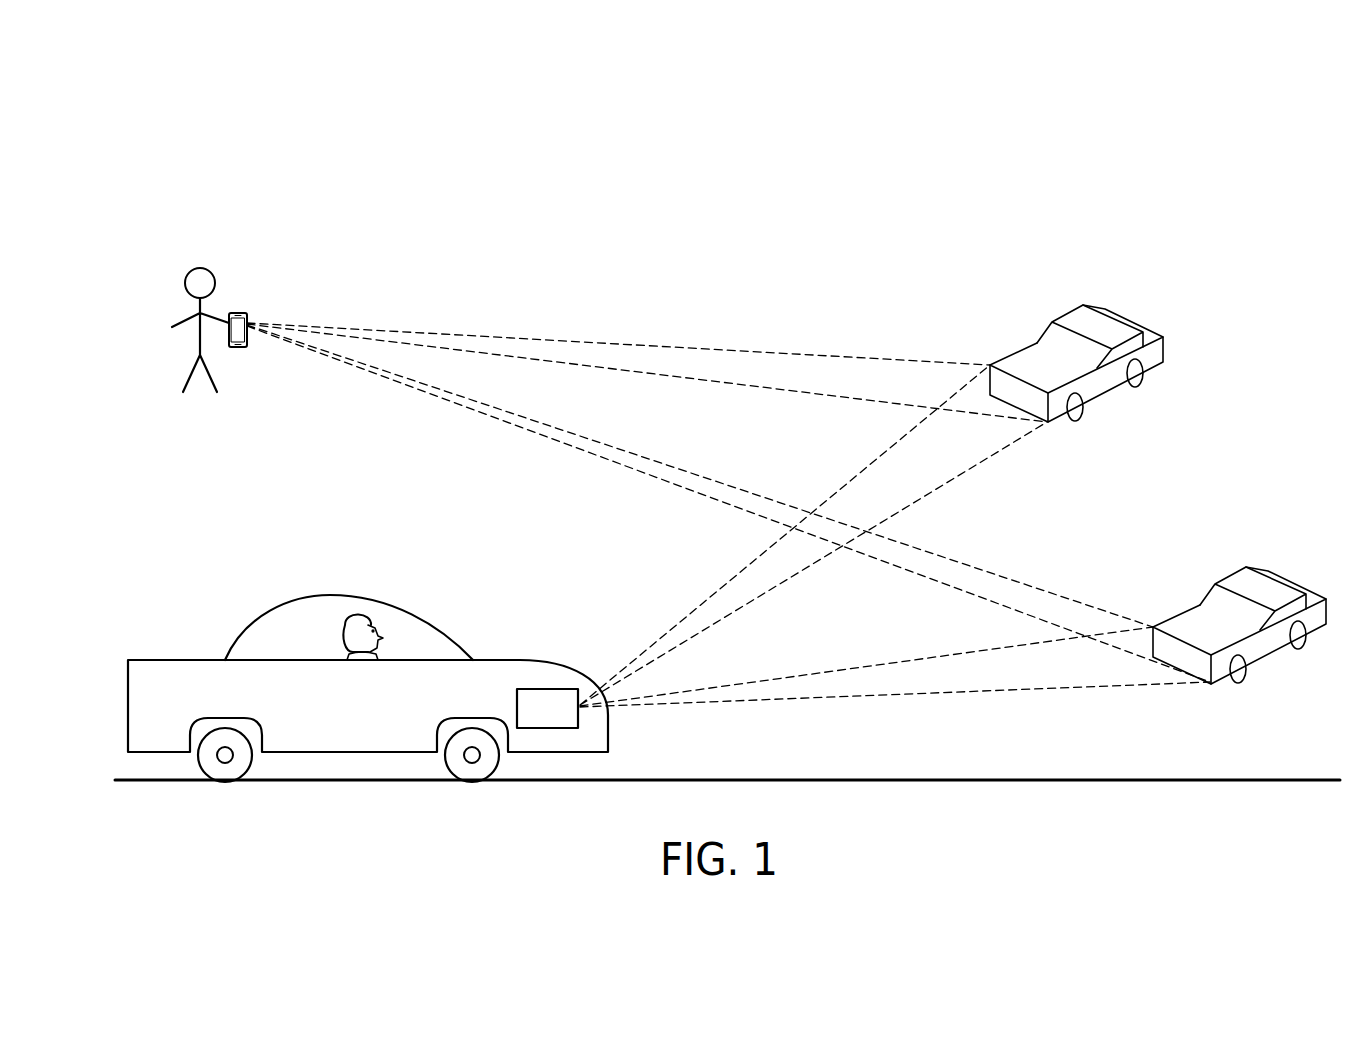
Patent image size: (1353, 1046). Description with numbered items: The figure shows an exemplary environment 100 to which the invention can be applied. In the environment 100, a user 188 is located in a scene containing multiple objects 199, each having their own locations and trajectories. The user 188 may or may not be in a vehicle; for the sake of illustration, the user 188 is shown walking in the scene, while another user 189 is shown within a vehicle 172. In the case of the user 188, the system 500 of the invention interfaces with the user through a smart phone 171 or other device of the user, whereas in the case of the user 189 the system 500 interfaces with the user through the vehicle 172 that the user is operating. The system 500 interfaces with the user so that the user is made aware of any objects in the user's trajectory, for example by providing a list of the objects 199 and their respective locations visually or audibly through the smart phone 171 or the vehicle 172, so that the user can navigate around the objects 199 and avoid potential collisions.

The environment 100 is at (226, 106).
The user 189 is at (199, 267).
The smart phone 171 is at (237, 312).
The system 500 is at (237, 354).
The vehicle 172 is at (387, 710).
The user 188 is at (338, 629).
The objects 199 is at (1060, 303).